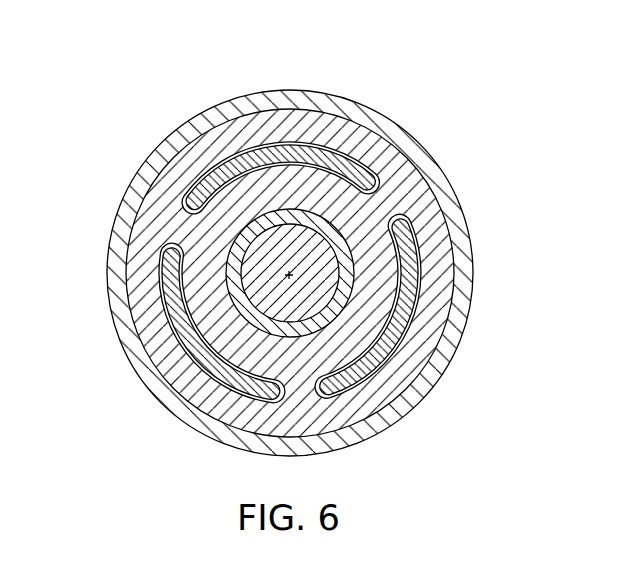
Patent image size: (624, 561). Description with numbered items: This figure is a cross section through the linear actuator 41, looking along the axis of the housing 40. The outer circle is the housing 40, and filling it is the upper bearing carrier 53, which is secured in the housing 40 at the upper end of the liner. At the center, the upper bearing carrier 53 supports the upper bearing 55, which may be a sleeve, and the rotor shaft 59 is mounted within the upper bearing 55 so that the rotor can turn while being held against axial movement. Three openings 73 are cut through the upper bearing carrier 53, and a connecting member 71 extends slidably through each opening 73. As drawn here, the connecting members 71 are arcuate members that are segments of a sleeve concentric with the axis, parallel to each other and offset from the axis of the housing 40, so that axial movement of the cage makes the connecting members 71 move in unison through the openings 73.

The housing 40 is at (138, 368).
The linear actuator 41 is at (373, 108).
The upper bearing carrier 53 is at (164, 154).
The upper bearing 55 is at (288, 338).
The rotor shaft 59 is at (257, 267).
The connecting member 71 is at (205, 367).
The opening 73 is at (411, 301).